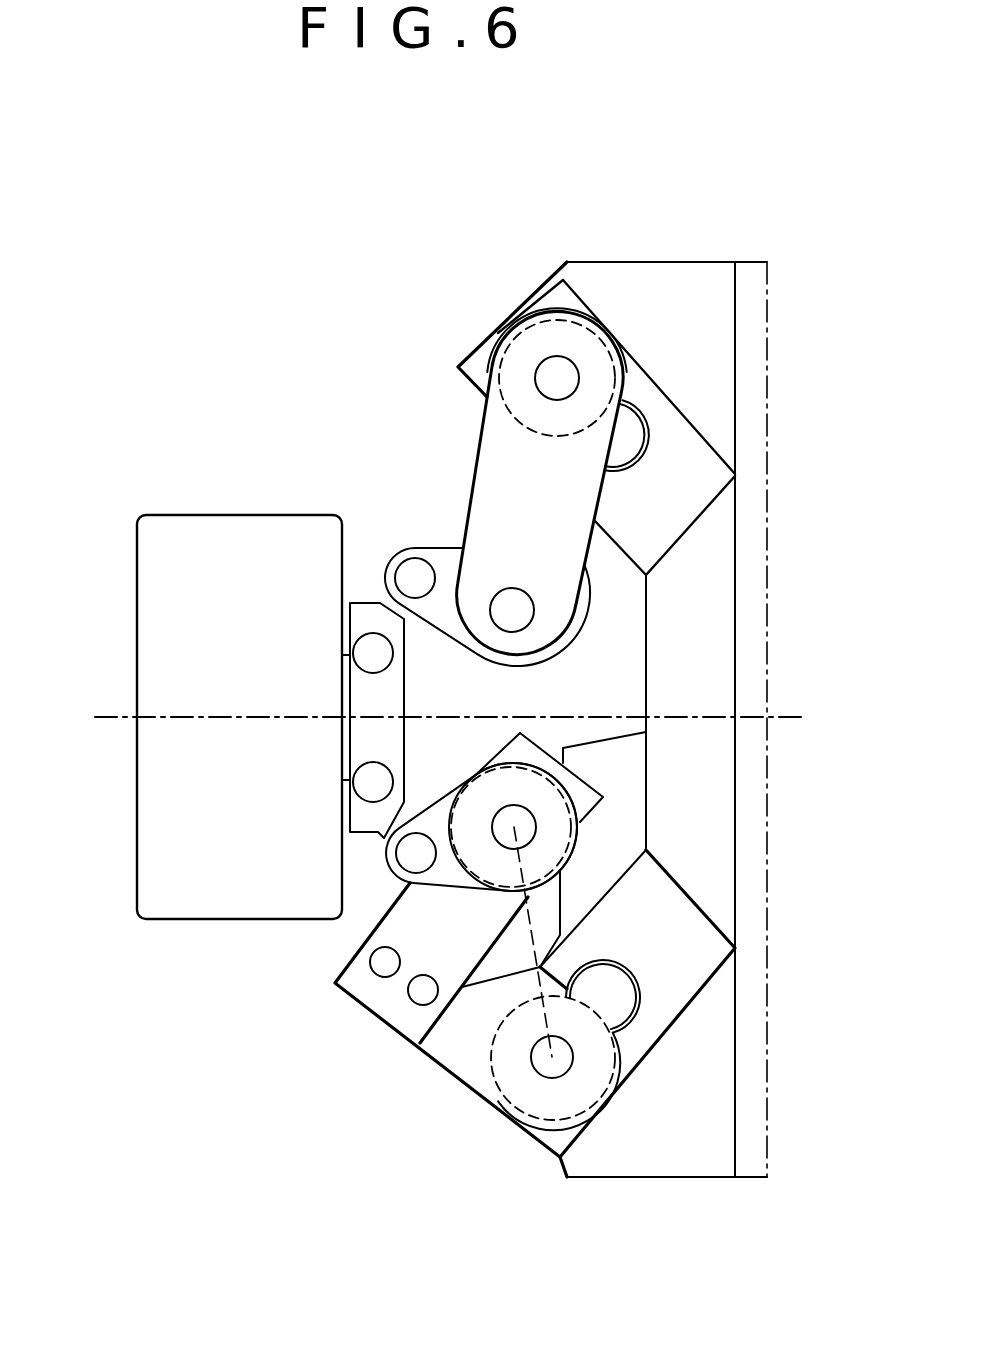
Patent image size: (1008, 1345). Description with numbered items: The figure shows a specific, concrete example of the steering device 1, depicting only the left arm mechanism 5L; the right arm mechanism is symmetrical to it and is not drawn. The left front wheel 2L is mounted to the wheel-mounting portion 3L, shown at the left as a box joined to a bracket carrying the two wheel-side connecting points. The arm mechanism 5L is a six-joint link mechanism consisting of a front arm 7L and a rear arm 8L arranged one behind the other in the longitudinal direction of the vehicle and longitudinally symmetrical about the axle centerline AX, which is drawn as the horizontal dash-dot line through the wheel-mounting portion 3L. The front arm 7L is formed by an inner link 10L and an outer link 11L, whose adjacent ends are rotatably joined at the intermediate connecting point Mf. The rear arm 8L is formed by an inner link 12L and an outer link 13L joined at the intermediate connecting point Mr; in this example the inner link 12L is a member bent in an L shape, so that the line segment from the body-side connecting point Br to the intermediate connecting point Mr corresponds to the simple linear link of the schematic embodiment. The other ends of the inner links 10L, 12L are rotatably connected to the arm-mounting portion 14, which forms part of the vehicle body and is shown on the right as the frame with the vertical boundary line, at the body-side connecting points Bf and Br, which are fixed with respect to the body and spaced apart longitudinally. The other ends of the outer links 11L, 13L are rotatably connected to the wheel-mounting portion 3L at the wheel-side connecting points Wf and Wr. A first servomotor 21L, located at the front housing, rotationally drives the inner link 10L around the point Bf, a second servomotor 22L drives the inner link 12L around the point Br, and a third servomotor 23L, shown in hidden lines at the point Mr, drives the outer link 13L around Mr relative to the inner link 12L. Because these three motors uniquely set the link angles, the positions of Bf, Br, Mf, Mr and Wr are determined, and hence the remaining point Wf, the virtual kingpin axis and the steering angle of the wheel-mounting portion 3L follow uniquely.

The steering device 1 is at (711, 131).
The left front wheel 2L is at (204, 515).
The left wheel-mounting portion 3L is at (390, 704).
The left arm mechanism 5L is at (529, 219).
The front arm 7L is at (468, 477).
The rear arm 8L is at (558, 993).
The inner link 10L is at (488, 477).
The outer link 11L is at (443, 550).
The inner link 12L is at (458, 1082).
The outer link 13L is at (453, 887).
The arm-mounting portion 14 is at (713, 613).
The first servomotor 21L is at (627, 362).
The second servomotor 22L is at (582, 1123).
The third servomotor 23L is at (573, 793).
The axle centerline AX is at (110, 716).
The body-side connecting point Bf is at (553, 370).
The body-side connecting point Br is at (543, 1078).
The intermediate connecting point Mf is at (527, 630).
The intermediate connecting point Mr is at (505, 827).
The wheel-side connecting point Wf is at (412, 578).
The wheel-side connecting point Wr is at (412, 860).